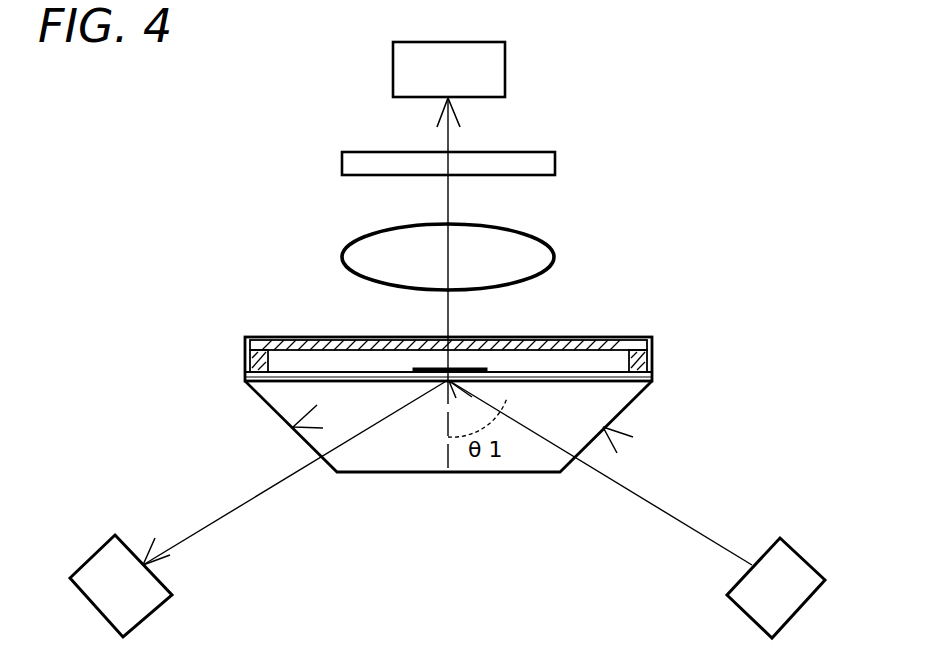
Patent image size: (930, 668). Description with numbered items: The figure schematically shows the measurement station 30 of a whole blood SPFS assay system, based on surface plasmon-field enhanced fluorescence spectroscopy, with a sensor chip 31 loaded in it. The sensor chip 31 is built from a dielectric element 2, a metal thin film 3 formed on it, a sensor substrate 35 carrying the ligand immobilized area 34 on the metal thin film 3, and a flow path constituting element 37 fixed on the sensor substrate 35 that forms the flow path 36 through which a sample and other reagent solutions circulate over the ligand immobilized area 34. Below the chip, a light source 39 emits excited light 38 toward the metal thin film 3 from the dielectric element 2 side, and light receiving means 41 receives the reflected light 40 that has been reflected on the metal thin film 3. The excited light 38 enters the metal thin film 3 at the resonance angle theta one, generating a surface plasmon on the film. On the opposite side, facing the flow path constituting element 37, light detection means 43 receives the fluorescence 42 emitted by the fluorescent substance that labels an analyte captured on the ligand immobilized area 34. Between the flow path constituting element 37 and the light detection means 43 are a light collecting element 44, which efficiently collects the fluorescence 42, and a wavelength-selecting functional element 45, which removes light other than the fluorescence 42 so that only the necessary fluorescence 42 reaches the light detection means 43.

The dielectric element 2 is at (630, 404).
The metal thin film 3 is at (490, 365).
The measurement station 30 is at (710, 140).
The sensor chip 31 is at (645, 313).
The ligand immobilized area 34 is at (612, 389).
The sensor substrate 35 is at (740, 343).
The flow path 36 is at (590, 337).
The flow path constituting element 37 is at (654, 355).
The excited light 38 is at (708, 528).
The light source 39 is at (792, 568).
The reflected light 40 is at (368, 403).
The light receiving means 41 is at (100, 570).
The fluorescence 42 is at (452, 202).
The light detection means 43 is at (489, 70).
The light collecting element 44 is at (357, 255).
The wavelength-selecting functional element 45 is at (353, 163).